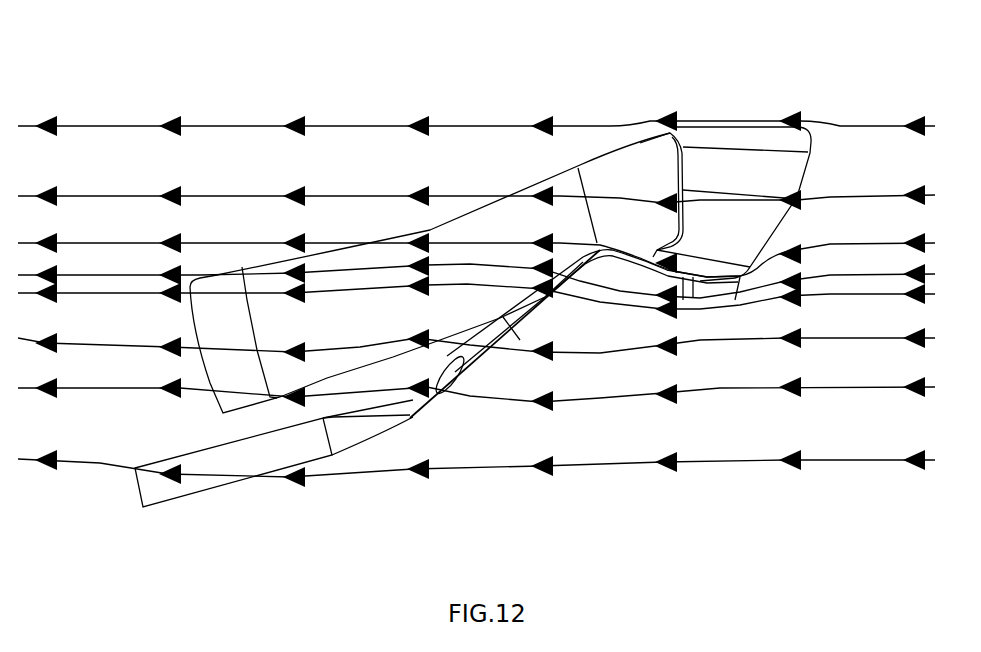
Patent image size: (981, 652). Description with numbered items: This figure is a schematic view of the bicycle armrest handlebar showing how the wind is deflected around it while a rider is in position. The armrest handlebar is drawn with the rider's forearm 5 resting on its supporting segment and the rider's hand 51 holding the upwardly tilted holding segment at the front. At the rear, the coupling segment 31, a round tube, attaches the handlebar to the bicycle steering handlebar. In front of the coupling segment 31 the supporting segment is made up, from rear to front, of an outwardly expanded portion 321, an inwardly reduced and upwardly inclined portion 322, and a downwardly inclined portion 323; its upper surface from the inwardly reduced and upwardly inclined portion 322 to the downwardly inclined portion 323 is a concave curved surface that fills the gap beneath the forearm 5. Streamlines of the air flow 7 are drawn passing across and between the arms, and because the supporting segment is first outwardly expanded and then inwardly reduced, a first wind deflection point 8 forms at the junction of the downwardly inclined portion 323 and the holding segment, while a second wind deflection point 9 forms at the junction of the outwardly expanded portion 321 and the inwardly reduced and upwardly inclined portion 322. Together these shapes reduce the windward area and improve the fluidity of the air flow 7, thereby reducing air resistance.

The forearm 5 is at (490, 222).
The hand 51 is at (718, 155).
The air flow 7 is at (848, 240).
The first wind deflection point 8 is at (738, 288).
The second wind deflection point 9 is at (418, 420).
The coupling segment 31 is at (190, 485).
The outwardly expanded portion 321 is at (348, 437).
The inwardly reduced and upwardly inclined portion 322 is at (478, 370).
The downwardly inclined portion 323 is at (682, 290).